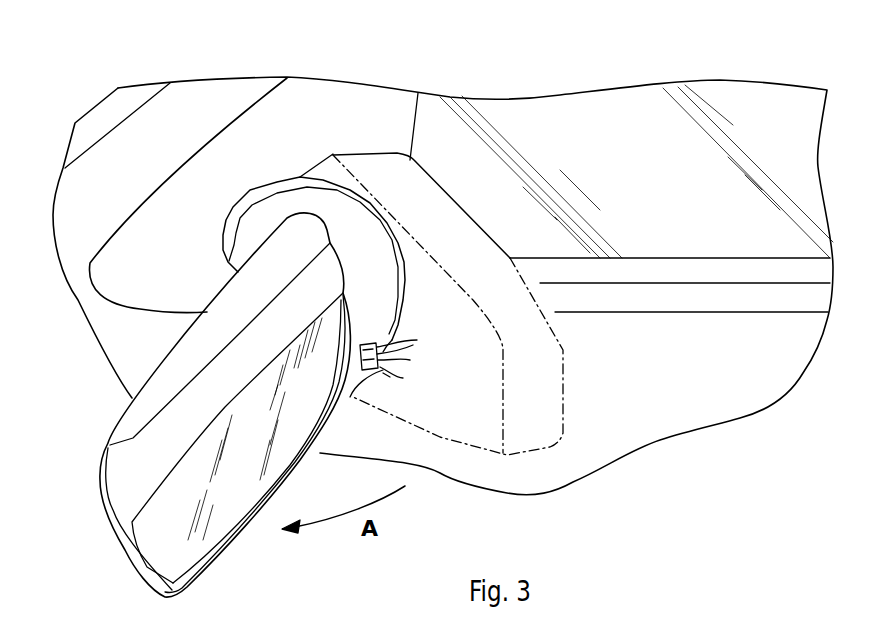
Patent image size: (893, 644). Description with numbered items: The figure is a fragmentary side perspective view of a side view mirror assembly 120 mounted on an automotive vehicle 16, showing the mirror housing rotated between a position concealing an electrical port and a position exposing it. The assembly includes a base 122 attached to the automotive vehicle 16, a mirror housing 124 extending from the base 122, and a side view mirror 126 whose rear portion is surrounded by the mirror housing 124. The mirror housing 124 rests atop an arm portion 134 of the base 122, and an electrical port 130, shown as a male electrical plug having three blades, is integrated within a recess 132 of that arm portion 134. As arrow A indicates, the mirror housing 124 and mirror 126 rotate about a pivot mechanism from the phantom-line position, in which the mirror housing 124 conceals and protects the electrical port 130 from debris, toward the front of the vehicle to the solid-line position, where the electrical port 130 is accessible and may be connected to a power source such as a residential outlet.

The automotive vehicle 16 is at (613, 467).
The side view mirror assembly 120 is at (577, 174).
The base 122 is at (333, 100).
The mirror housing 124 is at (128, 428).
The side view mirror 126 is at (233, 503).
The electrical port 130 is at (416, 341).
The recess 132 is at (400, 335).
The arm portion 134 is at (387, 377).